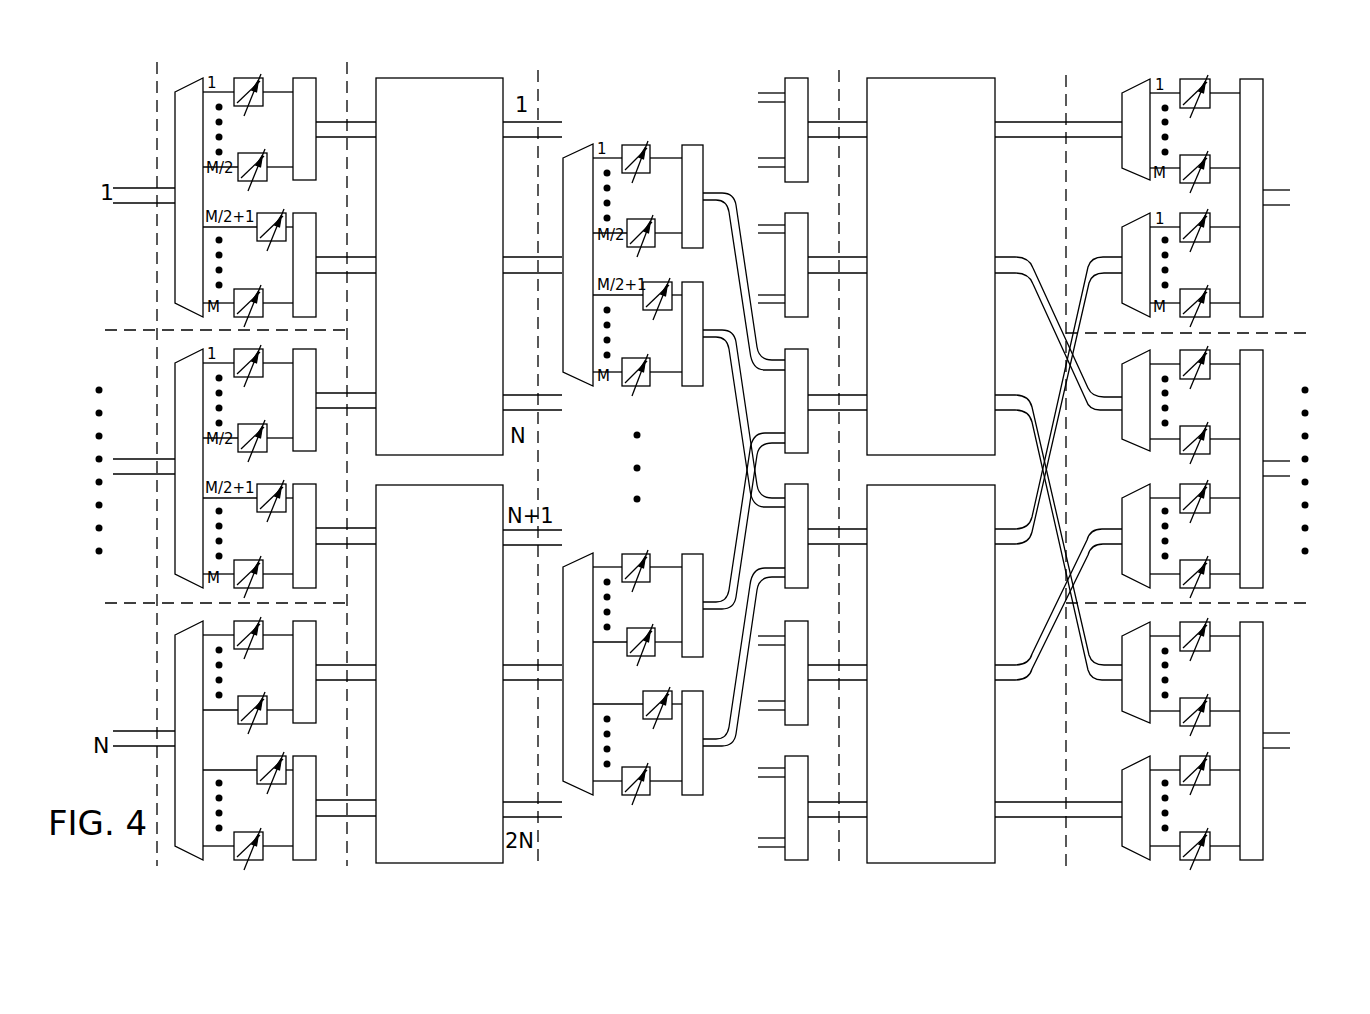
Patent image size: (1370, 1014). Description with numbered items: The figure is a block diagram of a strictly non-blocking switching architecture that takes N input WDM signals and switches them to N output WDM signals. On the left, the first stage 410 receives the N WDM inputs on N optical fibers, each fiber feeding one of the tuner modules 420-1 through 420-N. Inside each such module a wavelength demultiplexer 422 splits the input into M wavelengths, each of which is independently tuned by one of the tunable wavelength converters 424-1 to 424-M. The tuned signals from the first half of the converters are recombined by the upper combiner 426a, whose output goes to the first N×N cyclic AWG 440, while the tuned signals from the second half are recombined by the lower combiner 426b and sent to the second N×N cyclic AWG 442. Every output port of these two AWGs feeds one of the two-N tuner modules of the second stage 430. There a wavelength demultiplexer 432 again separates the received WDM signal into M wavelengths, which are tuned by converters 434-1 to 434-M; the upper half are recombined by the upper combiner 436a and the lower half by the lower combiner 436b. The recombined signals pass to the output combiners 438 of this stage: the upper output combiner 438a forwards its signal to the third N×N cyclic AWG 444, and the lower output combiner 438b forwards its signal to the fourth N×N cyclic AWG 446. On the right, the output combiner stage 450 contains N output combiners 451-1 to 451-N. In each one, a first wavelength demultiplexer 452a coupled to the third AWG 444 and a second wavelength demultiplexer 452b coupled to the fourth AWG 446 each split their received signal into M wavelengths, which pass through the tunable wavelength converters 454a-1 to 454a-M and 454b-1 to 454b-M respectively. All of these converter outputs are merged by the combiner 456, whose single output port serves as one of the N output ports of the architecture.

The first stage 410 is at (275, 758).
The tuner module 420-1 is at (127, 228).
The tuner module 420-N is at (127, 709).
The wavelength demultiplexer 422 is at (190, 84).
The tunable wavelength converter 424-1 is at (242, 76).
The tunable wavelength converter 424-M is at (266, 306).
The upper combiner 426a is at (308, 80).
The lower combiner 426b is at (302, 292).
The second stage 430 is at (674, 429).
The wavelength demultiplexer 432 is at (575, 150).
The tunable wavelength converter 434-1 is at (650, 145).
The tunable wavelength converter 434-M is at (634, 388).
The upper combiner 436a is at (693, 144).
The lower combiner 436b is at (704, 373).
The output combiner 438 is at (797, 78).
The upper output combiner 438a is at (783, 352).
The lower output combiner 438b is at (785, 490).
The first N×N cyclic AWG 440 is at (438, 78).
The second N×N cyclic AWG 442 is at (432, 863).
The third N×N cyclic AWG 444 is at (930, 78).
The fourth N×N cyclic AWG 446 is at (932, 863).
The output combiner stage 450 is at (1348, 77).
The output combiner 451-1 is at (1270, 135).
The output combiner 451-N is at (1268, 697).
The first wavelength demultiplexer 452a is at (1136, 88).
The second wavelength demultiplexer 452b is at (1120, 287).
The tunable wavelength converter 454a-1 is at (1190, 66).
The tunable wavelength converter 454a-M is at (1190, 180).
The tunable wavelength converter 454b-1 is at (1202, 245).
The tunable wavelength converter 454b-M is at (1212, 314).
The combiner 456 is at (1248, 79).